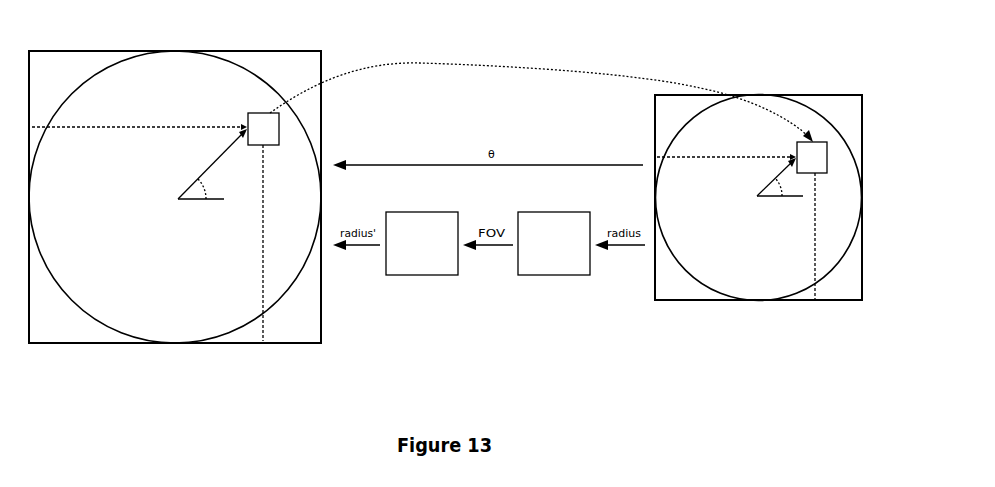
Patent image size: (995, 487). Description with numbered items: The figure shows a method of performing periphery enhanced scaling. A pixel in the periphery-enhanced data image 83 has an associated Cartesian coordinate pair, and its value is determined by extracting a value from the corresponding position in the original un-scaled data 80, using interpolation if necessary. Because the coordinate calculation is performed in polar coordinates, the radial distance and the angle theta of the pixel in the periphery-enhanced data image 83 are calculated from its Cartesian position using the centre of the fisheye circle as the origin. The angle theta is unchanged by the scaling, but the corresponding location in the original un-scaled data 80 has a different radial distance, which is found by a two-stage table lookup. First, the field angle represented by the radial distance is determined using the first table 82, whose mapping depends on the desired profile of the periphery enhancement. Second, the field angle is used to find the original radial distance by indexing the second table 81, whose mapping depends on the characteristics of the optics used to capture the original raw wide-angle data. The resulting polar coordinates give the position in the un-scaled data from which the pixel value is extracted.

The original un-scaled data 80 is at (268, 343).
The Table 2 81 is at (410, 275).
The Table 1 82 is at (545, 275).
The periphery-enhanced data image 83 is at (790, 300).